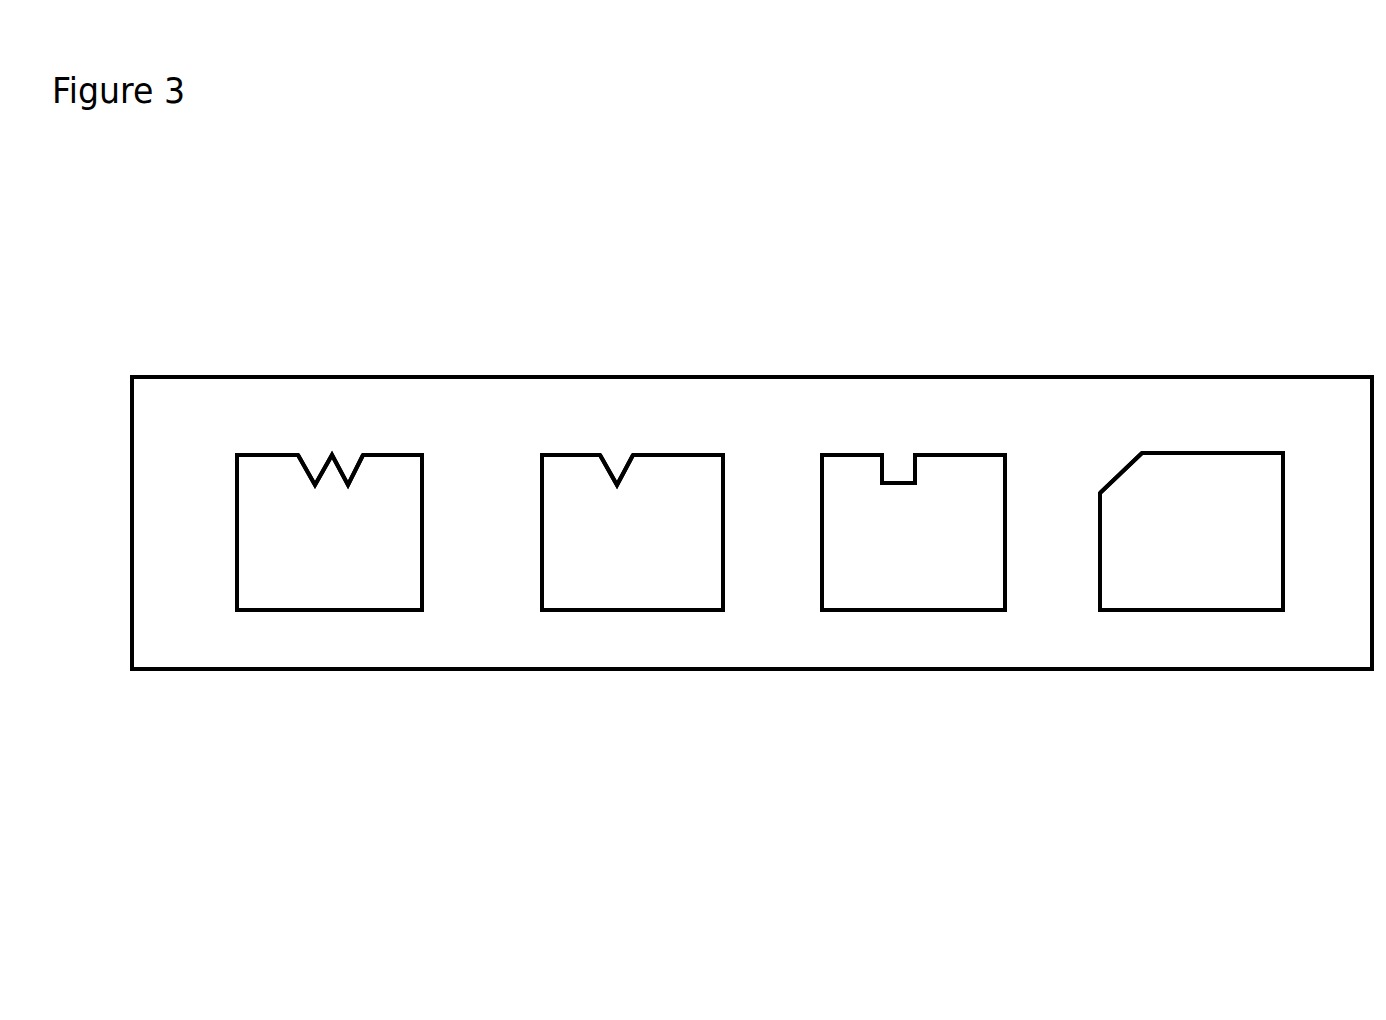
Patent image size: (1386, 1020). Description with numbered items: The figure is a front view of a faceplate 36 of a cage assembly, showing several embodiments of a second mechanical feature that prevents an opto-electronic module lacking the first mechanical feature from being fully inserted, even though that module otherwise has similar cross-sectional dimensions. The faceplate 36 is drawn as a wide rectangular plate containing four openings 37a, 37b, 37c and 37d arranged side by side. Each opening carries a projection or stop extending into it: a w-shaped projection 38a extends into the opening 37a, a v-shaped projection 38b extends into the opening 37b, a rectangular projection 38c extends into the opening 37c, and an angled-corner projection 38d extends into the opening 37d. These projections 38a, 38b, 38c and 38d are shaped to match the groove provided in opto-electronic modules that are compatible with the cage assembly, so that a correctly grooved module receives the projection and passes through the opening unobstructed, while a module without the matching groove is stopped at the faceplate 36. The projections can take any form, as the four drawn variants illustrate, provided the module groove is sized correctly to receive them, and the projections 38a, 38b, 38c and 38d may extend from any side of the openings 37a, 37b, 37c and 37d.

The faceplate 36 is at (183, 645).
The opening 37a is at (337, 572).
The opening 37b is at (606, 575).
The opening 37c is at (936, 578).
The opening 37d is at (1172, 557).
The projection 38a is at (312, 458).
The projection 38b is at (617, 457).
The projection 38c is at (890, 460).
The projection 38d is at (1117, 460).